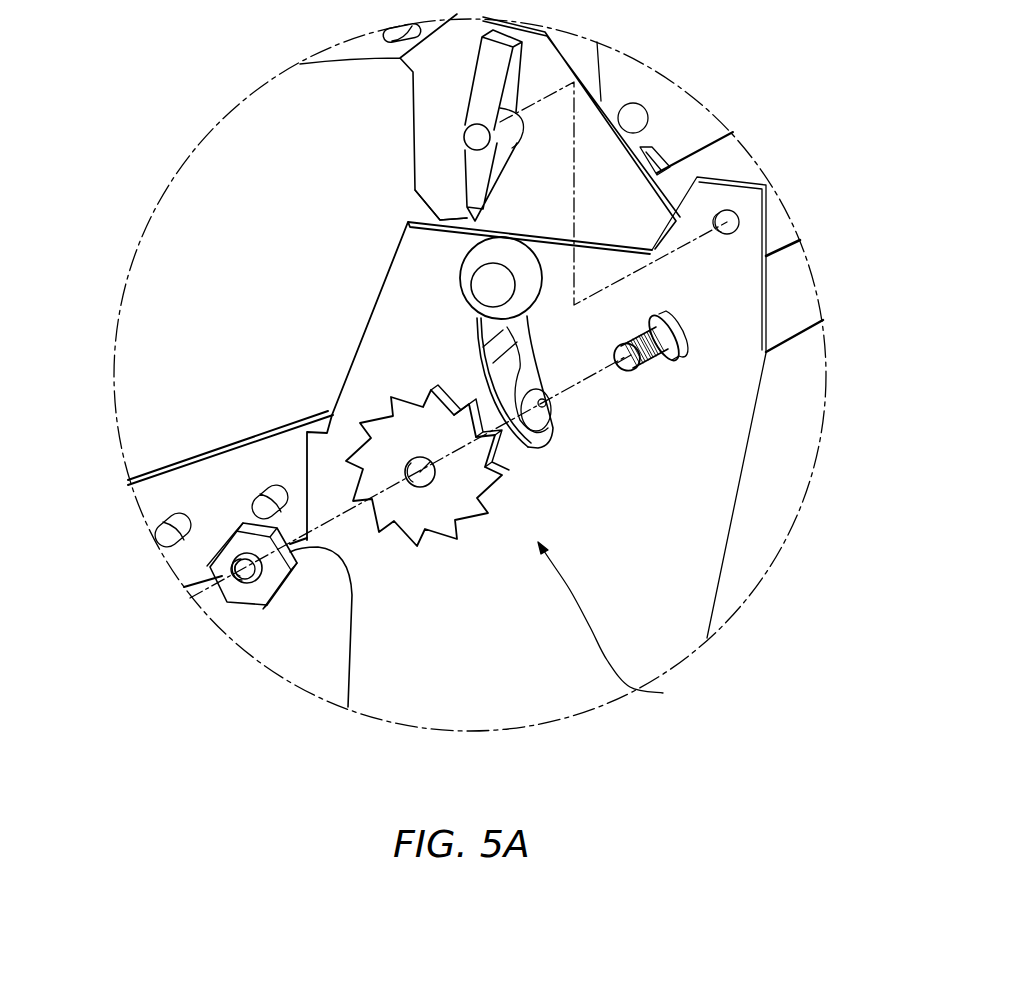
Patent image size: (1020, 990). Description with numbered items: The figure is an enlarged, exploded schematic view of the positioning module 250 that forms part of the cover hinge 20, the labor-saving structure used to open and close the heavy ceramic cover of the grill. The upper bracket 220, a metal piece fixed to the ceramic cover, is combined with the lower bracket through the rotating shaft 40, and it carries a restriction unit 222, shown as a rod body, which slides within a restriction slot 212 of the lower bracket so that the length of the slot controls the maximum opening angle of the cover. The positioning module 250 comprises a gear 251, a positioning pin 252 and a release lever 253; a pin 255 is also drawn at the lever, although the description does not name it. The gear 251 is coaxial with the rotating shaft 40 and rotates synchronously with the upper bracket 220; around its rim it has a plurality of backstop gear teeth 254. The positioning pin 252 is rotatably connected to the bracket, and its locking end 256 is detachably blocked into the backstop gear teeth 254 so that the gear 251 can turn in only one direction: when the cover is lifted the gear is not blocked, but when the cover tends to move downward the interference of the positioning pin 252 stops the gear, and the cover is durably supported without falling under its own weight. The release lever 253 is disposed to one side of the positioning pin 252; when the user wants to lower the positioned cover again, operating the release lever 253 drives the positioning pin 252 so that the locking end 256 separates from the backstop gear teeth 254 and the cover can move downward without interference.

The cover hinge 20 is at (750, 207).
The rotating shaft 40 is at (677, 352).
The restriction slot 212 is at (500, 360).
The upper bracket 220 is at (618, 175).
The restriction unit 222 is at (487, 282).
The positioning module 250 is at (629, 626).
The gear 251 is at (413, 520).
The positioning pin 252 is at (477, 177).
The release lever 253 is at (487, 90).
The backstop gear teeth 254 is at (428, 545).
The pin 255 is at (463, 135).
The locking end 256 is at (437, 218).